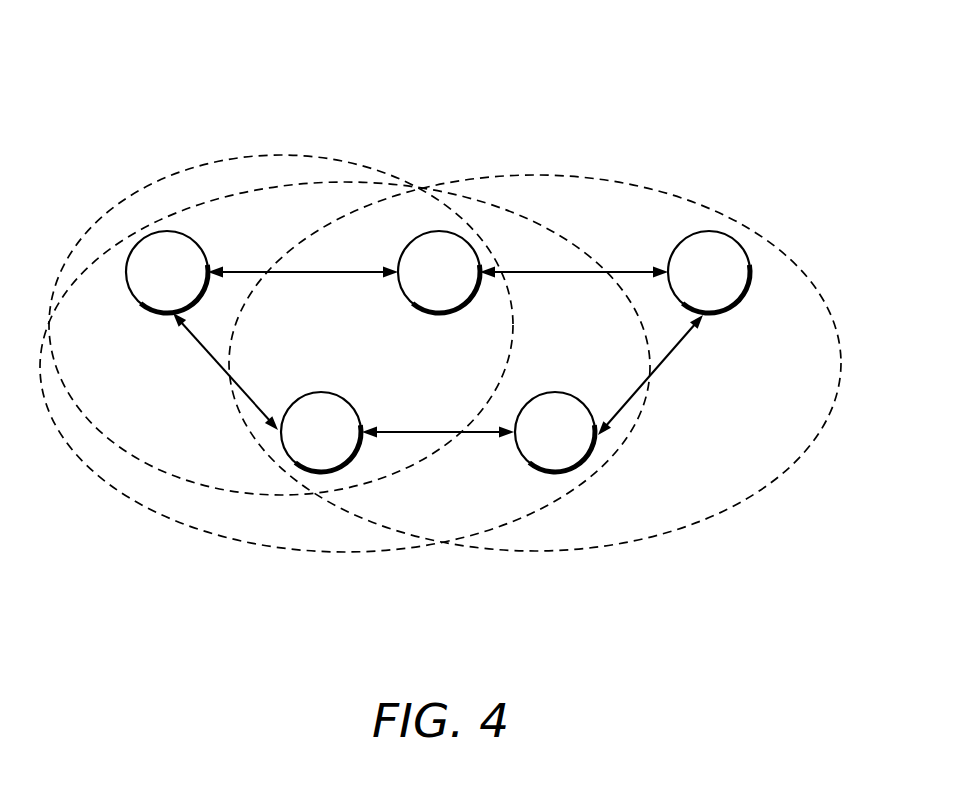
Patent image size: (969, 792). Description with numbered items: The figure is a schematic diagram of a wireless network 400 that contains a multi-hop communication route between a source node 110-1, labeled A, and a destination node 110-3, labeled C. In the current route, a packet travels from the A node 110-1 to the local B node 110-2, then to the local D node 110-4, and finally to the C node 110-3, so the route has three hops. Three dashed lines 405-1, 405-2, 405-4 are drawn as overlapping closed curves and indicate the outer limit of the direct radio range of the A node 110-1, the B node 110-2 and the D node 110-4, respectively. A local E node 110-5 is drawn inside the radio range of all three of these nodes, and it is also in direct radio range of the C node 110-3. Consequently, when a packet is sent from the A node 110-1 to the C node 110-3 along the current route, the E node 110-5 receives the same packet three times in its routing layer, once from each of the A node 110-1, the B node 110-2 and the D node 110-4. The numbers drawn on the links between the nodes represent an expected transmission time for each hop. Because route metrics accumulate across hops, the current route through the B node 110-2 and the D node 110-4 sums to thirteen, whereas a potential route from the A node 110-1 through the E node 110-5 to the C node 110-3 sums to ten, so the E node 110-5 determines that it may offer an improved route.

The wireless network 400 is at (631, 67).
The dashed line 405-1 is at (286, 153).
The dashed line 405-2 is at (342, 554).
The dashed line 405-4 is at (533, 554).
The source node 110-1 is at (199, 244).
The local B node 110-2 is at (320, 391).
The destination node 110-3 is at (670, 256).
The local D node 110-4 is at (555, 391).
The local E node 110-5 is at (401, 257).